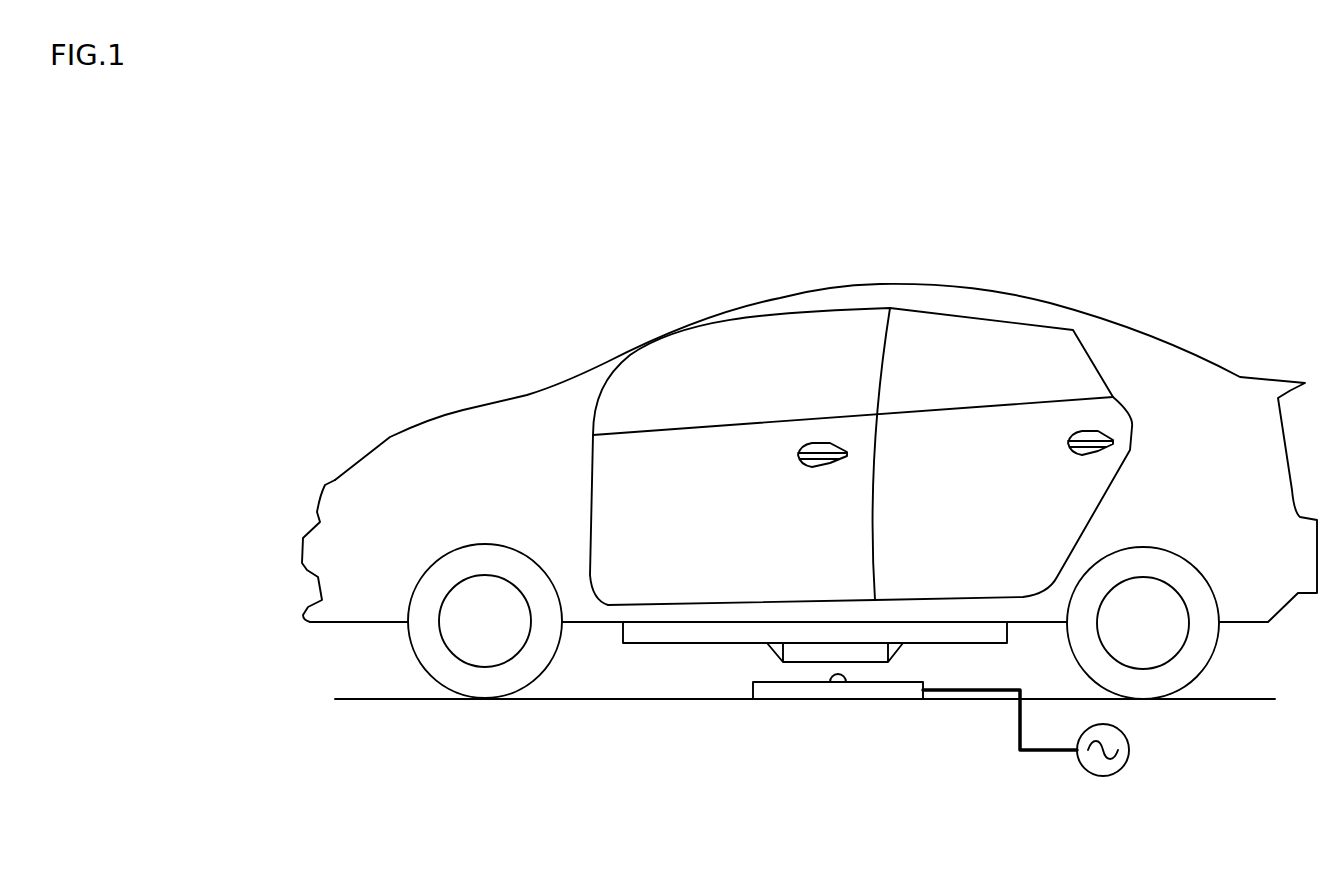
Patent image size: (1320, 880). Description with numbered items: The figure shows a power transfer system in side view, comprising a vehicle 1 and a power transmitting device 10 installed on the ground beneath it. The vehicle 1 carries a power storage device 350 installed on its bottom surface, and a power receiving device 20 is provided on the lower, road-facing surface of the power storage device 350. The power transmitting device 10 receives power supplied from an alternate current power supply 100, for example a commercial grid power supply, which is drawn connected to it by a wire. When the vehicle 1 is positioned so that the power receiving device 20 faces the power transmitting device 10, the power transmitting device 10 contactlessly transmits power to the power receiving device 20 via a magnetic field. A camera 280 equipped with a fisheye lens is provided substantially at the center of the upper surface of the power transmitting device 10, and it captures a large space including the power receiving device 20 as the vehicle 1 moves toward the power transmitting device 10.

The vehicle 1 is at (982, 257).
The power transmitting device 10 is at (838, 706).
The power receiving device 20 is at (755, 660).
The alternate current (AC) power supply 100 is at (1130, 750).
The camera 280 is at (848, 678).
The power storage device 350 is at (662, 632).